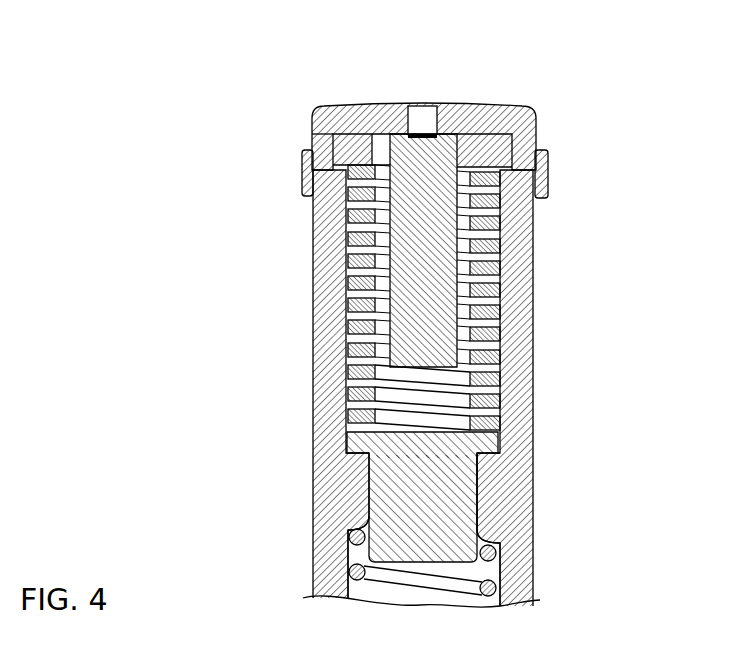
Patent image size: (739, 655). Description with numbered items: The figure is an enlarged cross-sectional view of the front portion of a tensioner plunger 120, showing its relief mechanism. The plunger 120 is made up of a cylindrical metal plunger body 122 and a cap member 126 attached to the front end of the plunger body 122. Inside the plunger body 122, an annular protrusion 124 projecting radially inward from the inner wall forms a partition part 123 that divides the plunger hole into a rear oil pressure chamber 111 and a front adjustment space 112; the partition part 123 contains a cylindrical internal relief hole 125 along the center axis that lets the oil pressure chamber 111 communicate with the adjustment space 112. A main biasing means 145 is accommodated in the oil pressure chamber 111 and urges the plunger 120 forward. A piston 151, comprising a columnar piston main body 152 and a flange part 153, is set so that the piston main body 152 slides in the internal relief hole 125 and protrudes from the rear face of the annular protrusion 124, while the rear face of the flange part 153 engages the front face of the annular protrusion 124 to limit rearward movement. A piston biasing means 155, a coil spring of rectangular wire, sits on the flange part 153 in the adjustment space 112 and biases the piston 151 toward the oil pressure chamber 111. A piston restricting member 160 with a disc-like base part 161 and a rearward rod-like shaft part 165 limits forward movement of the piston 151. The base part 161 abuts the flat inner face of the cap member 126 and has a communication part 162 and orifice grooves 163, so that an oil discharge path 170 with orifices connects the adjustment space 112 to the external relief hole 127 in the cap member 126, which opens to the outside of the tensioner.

The oil pressure chamber 111 is at (400, 582).
The adjustment space 112 is at (397, 397).
The plunger 120 is at (141, 146).
The plunger body 122 is at (399, 388).
The partition part 123 is at (489, 525).
The annular protrusion 124 is at (500, 437).
The internal relief hole 125 is at (477, 491).
The cap member 126 is at (306, 178).
The external relief hole 127 is at (433, 105).
The main biasing means 145 is at (492, 586).
The piston 151 is at (152, 420).
The piston main body 152 is at (378, 492).
The flange part 153 is at (347, 450).
The piston biasing means 155 is at (497, 290).
The piston restricting member 160 is at (682, 151).
The base part 161 is at (429, 100).
The communication part 162 is at (323, 148).
The orifice grooves 163 is at (398, 133).
The shaft part 165 is at (442, 215).
The oil discharge path 170 is at (419, 137).